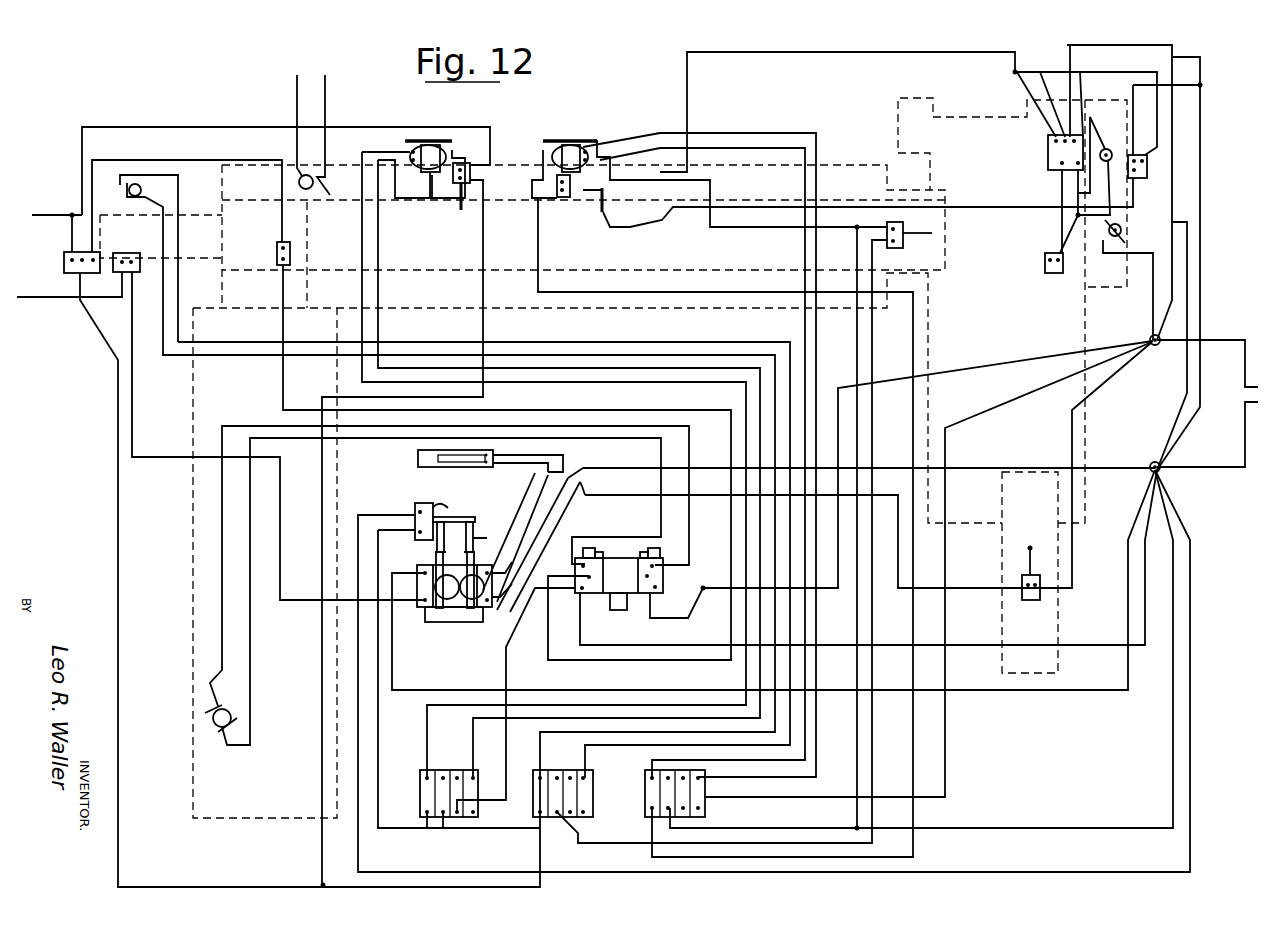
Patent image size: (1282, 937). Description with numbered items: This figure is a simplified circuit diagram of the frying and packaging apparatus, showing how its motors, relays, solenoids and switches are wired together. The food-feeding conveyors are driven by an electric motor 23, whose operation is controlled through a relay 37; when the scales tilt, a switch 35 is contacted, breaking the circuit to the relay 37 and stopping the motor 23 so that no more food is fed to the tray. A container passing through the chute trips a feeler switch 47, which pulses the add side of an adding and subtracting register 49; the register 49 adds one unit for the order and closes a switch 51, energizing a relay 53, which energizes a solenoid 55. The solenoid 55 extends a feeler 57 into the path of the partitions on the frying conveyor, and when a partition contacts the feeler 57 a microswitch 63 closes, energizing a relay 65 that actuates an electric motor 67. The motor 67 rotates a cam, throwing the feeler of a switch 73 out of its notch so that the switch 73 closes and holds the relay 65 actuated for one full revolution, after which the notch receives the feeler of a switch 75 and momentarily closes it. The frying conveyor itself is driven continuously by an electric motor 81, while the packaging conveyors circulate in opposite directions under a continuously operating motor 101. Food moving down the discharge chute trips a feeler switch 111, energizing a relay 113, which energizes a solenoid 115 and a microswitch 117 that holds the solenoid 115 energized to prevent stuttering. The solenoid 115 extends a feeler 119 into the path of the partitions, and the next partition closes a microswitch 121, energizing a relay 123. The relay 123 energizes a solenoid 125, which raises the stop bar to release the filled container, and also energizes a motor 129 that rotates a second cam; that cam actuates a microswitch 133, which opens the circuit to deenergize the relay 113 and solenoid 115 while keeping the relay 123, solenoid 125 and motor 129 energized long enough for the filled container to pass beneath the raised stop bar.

The electric motor 23 is at (213, 722).
The switch 35 is at (277, 250).
The relay 37 is at (615, 558).
The feeler switch 47 is at (1030, 600).
The adding and subtracting register 49 is at (452, 622).
The switch 51 is at (415, 512).
The relay 53 is at (443, 770).
The solenoid 55 is at (428, 147).
The feeler 57 is at (455, 205).
The microswitch 63 is at (462, 165).
The relay 65 is at (575, 770).
The electric motor 67 is at (137, 184).
The switch 73 is at (64, 262).
The switch 75 is at (124, 272).
The electric motor 81 is at (310, 176).
The motor 101 is at (1125, 233).
The feeler switch 111 is at (903, 240).
The relay 113 is at (705, 812).
The solenoid 115 is at (575, 147).
The microswitch 117 is at (560, 200).
The feeler 119 is at (603, 212).
The microswitch 121 is at (660, 130).
The relay 123 is at (1048, 155).
The solenoid 125 is at (1050, 275).
The motor 129 is at (1112, 153).
The microswitch 133 is at (1147, 167).